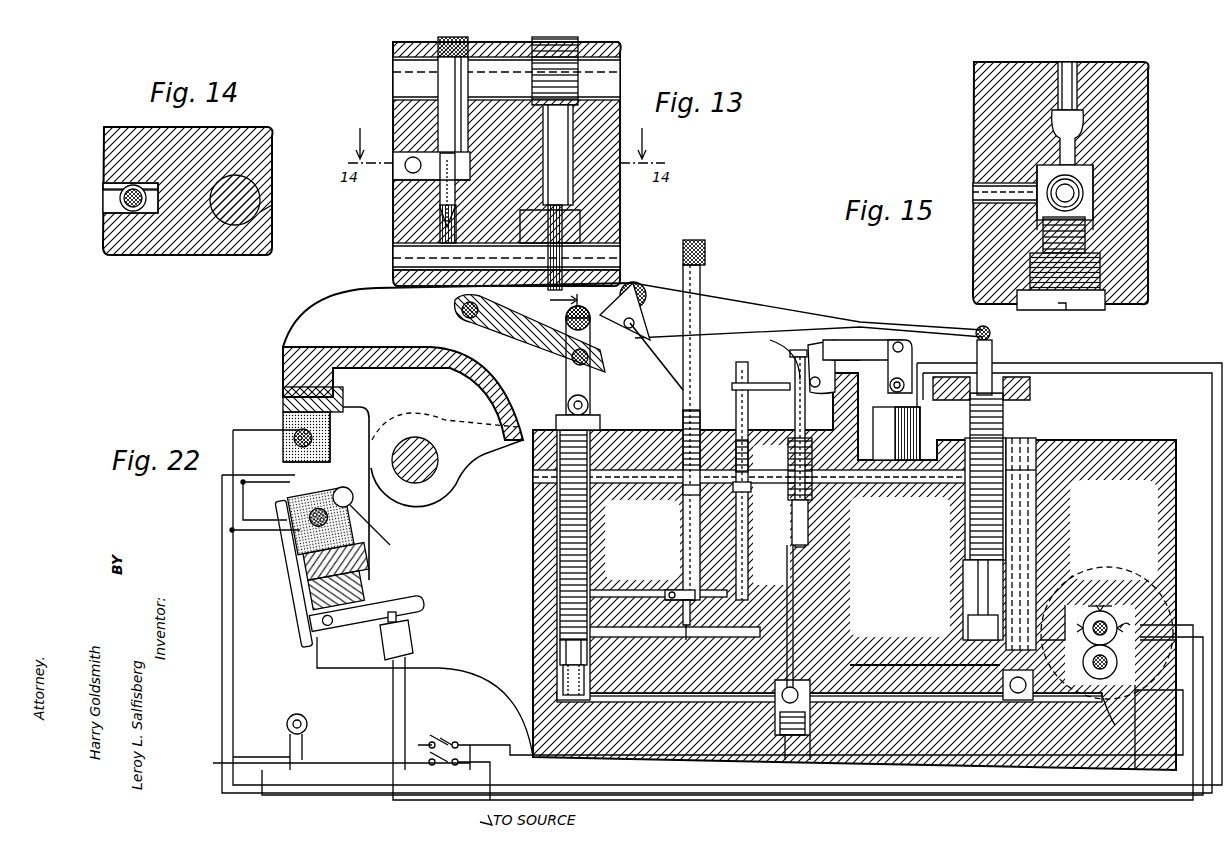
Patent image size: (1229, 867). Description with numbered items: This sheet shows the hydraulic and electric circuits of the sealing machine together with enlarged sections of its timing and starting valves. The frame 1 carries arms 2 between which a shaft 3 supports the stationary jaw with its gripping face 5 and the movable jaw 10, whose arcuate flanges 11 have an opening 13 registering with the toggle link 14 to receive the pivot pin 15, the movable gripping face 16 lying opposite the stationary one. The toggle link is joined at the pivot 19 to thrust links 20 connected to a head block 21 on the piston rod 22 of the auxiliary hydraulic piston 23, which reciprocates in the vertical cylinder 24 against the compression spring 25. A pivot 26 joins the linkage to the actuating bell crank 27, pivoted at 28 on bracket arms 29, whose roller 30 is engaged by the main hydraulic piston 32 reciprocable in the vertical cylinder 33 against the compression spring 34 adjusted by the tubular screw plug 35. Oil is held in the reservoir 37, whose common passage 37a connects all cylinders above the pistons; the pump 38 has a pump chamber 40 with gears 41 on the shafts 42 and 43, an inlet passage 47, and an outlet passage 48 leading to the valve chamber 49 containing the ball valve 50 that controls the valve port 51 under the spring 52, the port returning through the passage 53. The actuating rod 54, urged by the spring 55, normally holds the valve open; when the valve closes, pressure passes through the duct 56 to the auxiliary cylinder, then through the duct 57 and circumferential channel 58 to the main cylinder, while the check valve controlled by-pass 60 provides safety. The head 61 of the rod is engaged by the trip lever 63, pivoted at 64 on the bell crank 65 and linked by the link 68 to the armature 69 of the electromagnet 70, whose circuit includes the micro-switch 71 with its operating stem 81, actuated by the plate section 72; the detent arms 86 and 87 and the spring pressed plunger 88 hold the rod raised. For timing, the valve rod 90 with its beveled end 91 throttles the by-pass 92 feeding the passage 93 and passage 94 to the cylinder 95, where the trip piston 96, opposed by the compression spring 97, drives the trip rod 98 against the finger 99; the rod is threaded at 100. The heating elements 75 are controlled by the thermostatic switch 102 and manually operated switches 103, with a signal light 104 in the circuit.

In FIG. 14, the frame 1 is at (196, 250).
In FIG. 13, the frame 1 is at (622, 228).
In FIG. 15, the frame 1 is at (973, 280).
In FIG. 22, the frame 1 is at (970, 770).
In FIG. 22, the arms 2 is at (510, 430).
In FIG. 22, the shaft 3 is at (427, 483).
In FIG. 22, the gripping face 5 is at (285, 502).
In FIG. 22, the movable jaw 10 is at (283, 358).
In FIG. 22, the arcuate flanges 11 is at (320, 315).
In FIG. 22, the opening 13 is at (462, 320).
In FIG. 22, the toggle link 14 is at (530, 364).
In FIG. 22, the pivot pin 15 is at (455, 318).
In FIG. 22, the gripping face 16 is at (320, 462).
In FIG. 22, the pivot 19 is at (557, 310).
In FIG. 22, the thrust links 20 is at (590, 390).
In FIG. 22, the head block 21 is at (566, 400).
In FIG. 22, the piston rod 22 is at (533, 465).
In FIG. 22, the auxiliary hydraulic piston 23 is at (558, 660).
In FIG. 22, the vertical cylinder 24 is at (557, 636).
In FIG. 22, the compression spring 25 is at (558, 560).
In FIG. 22, the pivot 26 is at (640, 283).
In FIG. 22, the actuating bell crank 27 is at (730, 305).
In FIG. 22, the pivot 28 is at (633, 340).
In FIG. 22, the bracket arms 29 is at (656, 340).
In FIG. 22, the roller 30 is at (992, 333).
In FIG. 22, the main hydraulic piston 32 is at (1004, 548).
In FIG. 22, the vertical cylinder 33 is at (1014, 525).
In FIG. 22, the compression spring 34 is at (1006, 488).
In FIG. 22, the tubular screw plug 35 is at (1010, 410).
In FIG. 22, the reservoir 37 is at (1095, 568).
In FIG. 22, the common passage 37a is at (540, 482).
In FIG. 22, the pump 38 is at (1112, 610).
In FIG. 22, the pump chamber 40 is at (1103, 610).
In FIG. 22, the gears 41 is at (1085, 622).
In FIG. 22, the shaft 42 is at (1140, 622).
In FIG. 22, the shaft 43 is at (1140, 637).
In FIG. 22, the inlet passage 47 is at (1065, 634).
In FIG. 22, the outlet passage 48 is at (1135, 770).
In FIG. 14, the valve chamber 49 is at (272, 216).
In FIG. 13, the valve chamber 49 is at (582, 216).
In FIG. 15, the valve chamber 49 is at (1095, 178).
In FIG. 22, the valve chamber 49 is at (818, 740).
In FIG. 15, the ball valve 50 is at (1048, 198).
In FIG. 22, the ball valve 50 is at (778, 705).
In FIG. 22, the valve port 51 is at (780, 688).
In FIG. 15, the spring 52 is at (1046, 228).
In FIG. 22, the spring 52 is at (790, 760).
In FIG. 15, the passage 53 is at (1058, 130).
In FIG. 22, the passage 53 is at (885, 665).
In FIG. 14, the actuating rod 54 is at (262, 200).
In FIG. 13, the actuating rod 54 is at (574, 150).
In FIG. 15, the actuating rod 54 is at (1062, 92).
In FIG. 22, the actuating rod 54 is at (795, 390).
In FIG. 13, the spring 55 is at (575, 95).
In FIG. 22, the spring 55 is at (790, 440).
In FIG. 15, the duct 56 is at (1000, 190).
In FIG. 22, the duct 56 is at (672, 703).
In FIG. 13, the duct 57 is at (393, 266).
In FIG. 22, the duct 57 is at (662, 638).
In FIG. 22, the circumferential channel 58 is at (965, 610).
In FIG. 22, the check valve controlled by-pass 60 is at (1010, 698).
In FIG. 22, the head 61 is at (816, 345).
In FIG. 22, the trip lever 63 is at (875, 340).
In FIG. 22, the pivot 64 is at (833, 362).
In FIG. 22, the bell crank 65 is at (769, 357).
In FIG. 22, the link 68 is at (905, 356).
In FIG. 22, the armature 69 is at (888, 393).
In FIG. 22, the electromagnet 70 is at (912, 420).
In FIG. 22, the micro-switch 71 is at (390, 645).
In FIG. 22, the plate section 72 is at (290, 600).
In FIG. 22, the electrical heating elements 75 is at (312, 440).
In FIG. 22, the operating stem 81 is at (400, 614).
In FIG. 22, the arm 86 is at (828, 340).
In FIG. 22, the arm 87 is at (855, 343).
In FIG. 22, the spring pressed plunger 88 is at (858, 345).
In FIG. 14, the valve rod 90 is at (120, 207).
In FIG. 13, the valve rod 90 is at (442, 84).
In FIG. 22, the valve rod 90 is at (683, 392).
In FIG. 14, the beveled end 91 is at (103, 228).
In FIG. 13, the beveled end 91 is at (400, 222).
In FIG. 22, the beveled end 91 is at (684, 640).
In FIG. 14, the by-pass 92 is at (133, 210).
In FIG. 13, the by-pass 92 is at (440, 238).
In FIG. 22, the by-pass 92 is at (680, 598).
In FIG. 14, the passage 93 is at (112, 192).
In FIG. 13, the passage 93 is at (410, 172).
In FIG. 22, the passage 93 is at (626, 585).
In FIG. 13, the passage 94 is at (442, 200).
In FIG. 22, the passage 94 is at (690, 590).
In FIG. 22, the cylinder 95 is at (751, 487).
In FIG. 22, the trip piston 96 is at (702, 487).
In FIG. 22, the compression spring 97 is at (737, 436).
In FIG. 22, the trip rod 98 is at (737, 412).
In FIG. 22, the finger 99 is at (740, 386).
In FIG. 13, the screw threads 100 is at (440, 38).
In FIG. 22, the screw threads 100 is at (683, 416).
In FIG. 22, the thermostatic switch 102 is at (352, 505).
In FIG. 22, the manually operated switches 103 is at (445, 740).
In FIG. 22, the signal light 104 is at (312, 715).